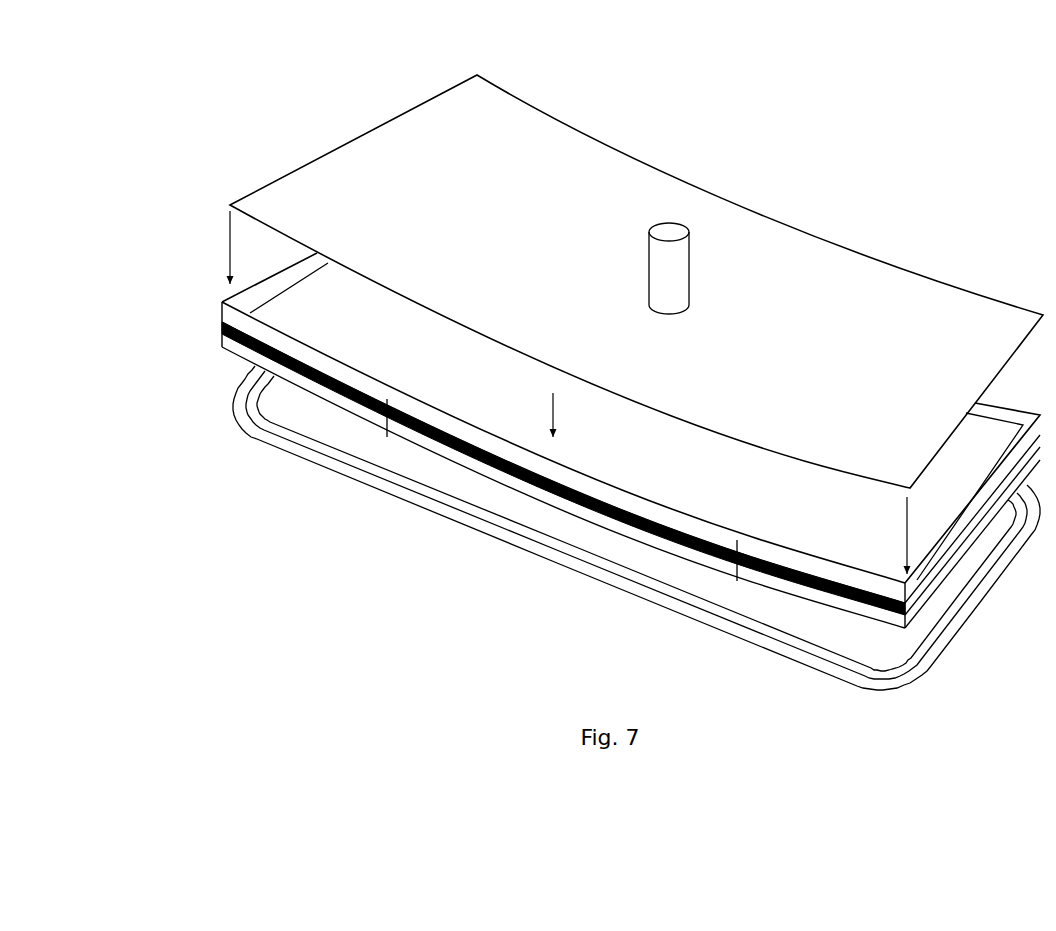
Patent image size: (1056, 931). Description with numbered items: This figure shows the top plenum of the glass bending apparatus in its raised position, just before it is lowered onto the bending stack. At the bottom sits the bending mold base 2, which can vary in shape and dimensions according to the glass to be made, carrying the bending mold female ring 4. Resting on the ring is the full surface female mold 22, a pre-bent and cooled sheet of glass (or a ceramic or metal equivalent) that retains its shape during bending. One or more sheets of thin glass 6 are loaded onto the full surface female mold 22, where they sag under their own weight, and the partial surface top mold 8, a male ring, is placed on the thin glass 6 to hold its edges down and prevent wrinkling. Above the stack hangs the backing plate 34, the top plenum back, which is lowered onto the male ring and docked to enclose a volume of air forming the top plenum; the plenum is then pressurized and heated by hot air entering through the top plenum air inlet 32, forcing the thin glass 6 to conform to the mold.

The bending mold base 2 is at (503, 537).
The bending mold female ring 4 is at (243, 352).
The thin glass 6 is at (207, 322).
The partial surface top mold 8 is at (227, 315).
The full surface female mold 22 is at (870, 612).
The top plenum air inlet 32 is at (647, 267).
The backing plate 34 is at (272, 177).